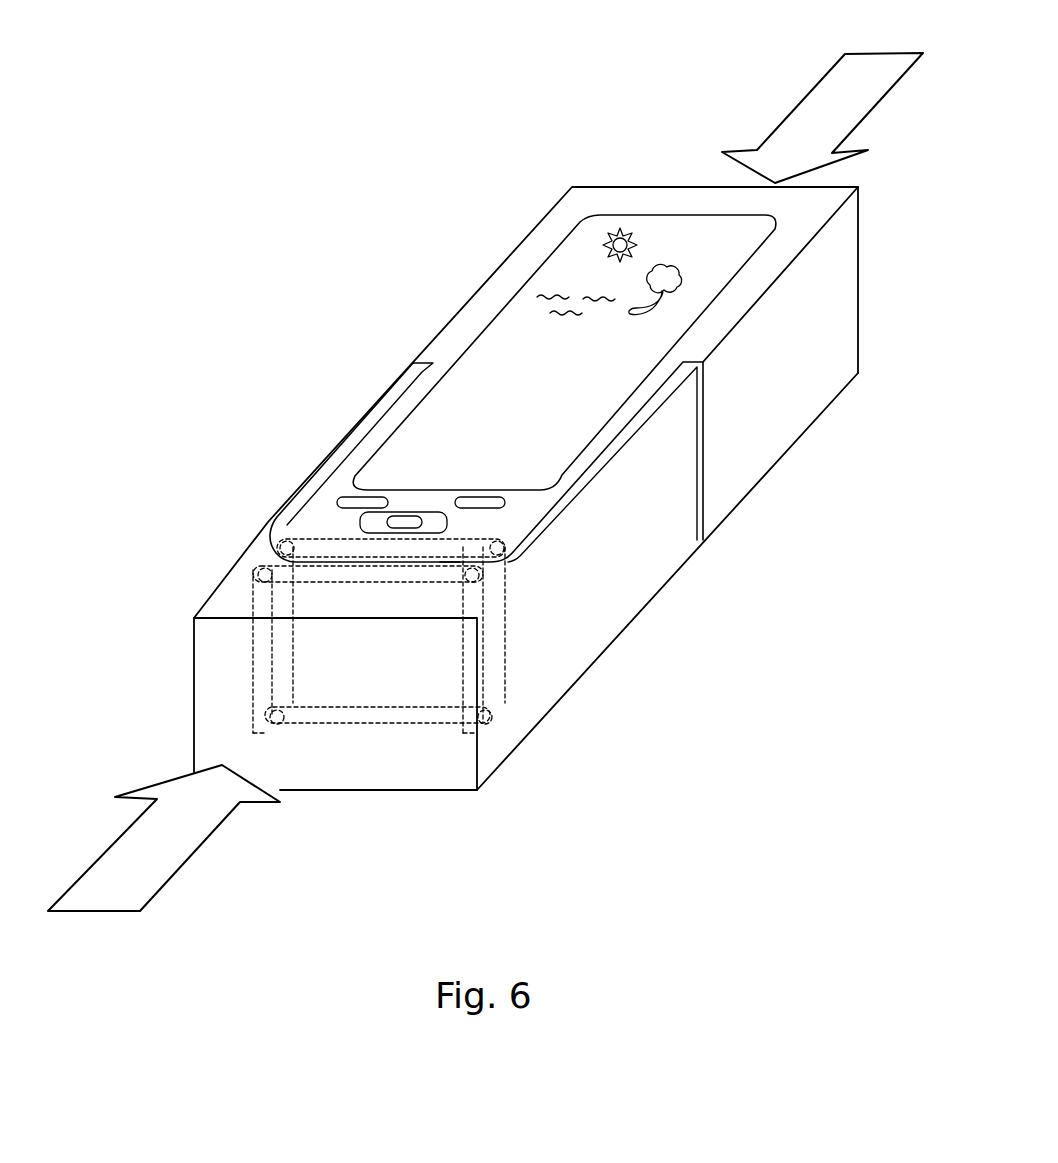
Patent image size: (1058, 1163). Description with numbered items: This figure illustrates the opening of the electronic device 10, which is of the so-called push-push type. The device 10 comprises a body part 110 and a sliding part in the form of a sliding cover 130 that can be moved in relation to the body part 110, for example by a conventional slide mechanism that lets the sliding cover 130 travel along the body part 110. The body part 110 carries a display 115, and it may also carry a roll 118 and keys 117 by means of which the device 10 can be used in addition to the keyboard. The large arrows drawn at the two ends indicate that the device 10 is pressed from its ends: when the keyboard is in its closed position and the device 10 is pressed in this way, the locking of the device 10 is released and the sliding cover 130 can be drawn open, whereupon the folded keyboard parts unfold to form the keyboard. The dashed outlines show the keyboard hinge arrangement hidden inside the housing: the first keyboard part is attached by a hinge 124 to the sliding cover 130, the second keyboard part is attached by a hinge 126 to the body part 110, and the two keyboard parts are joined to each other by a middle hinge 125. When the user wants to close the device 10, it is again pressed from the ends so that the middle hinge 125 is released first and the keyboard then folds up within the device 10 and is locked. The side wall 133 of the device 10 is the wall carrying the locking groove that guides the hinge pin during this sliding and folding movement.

The electronic device 10 is at (379, 194).
The body part 110 is at (710, 338).
The display 115 is at (660, 247).
The keys 117 is at (342, 498).
The roll 118 is at (367, 523).
The hinge 124 is at (357, 585).
The hinge 125 is at (342, 727).
The hinge 126 is at (450, 538).
The sliding cover 130 is at (494, 769).
The side wall 133 is at (579, 595).